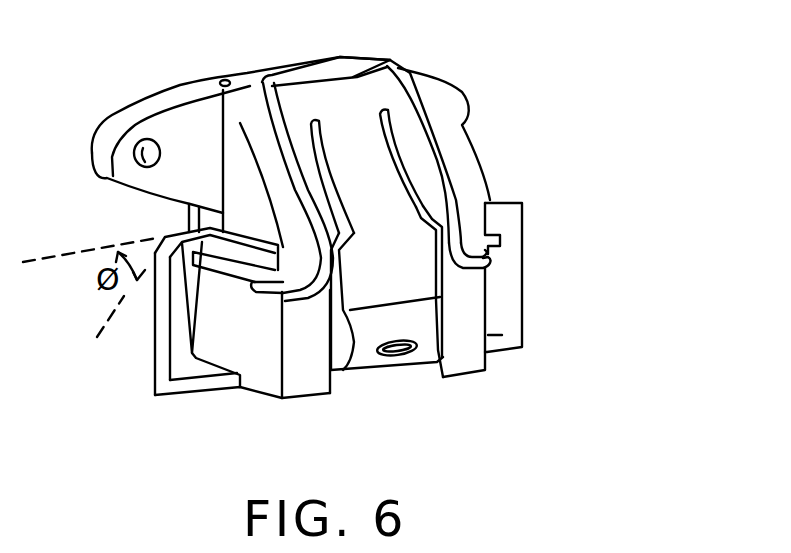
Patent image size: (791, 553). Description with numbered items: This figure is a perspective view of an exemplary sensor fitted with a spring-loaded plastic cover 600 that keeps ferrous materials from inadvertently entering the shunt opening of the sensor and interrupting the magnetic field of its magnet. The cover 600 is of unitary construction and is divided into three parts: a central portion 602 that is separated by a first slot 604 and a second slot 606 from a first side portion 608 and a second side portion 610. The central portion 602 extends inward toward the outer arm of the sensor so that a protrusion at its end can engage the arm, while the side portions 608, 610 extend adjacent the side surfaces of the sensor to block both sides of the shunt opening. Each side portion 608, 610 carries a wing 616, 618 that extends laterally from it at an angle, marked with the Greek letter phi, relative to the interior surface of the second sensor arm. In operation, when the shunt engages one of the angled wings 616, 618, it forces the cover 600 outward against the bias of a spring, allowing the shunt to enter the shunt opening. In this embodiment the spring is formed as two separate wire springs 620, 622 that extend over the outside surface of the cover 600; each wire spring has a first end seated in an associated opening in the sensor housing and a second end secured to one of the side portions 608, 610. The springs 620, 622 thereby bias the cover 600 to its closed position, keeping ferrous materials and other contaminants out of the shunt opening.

The spring-loaded plastic cover 600 is at (470, 173).
The central portion 602 is at (362, 358).
The first slot 604 is at (348, 363).
The second slot 606 is at (442, 290).
The first side portion 608 is at (260, 383).
The second side portion 610 is at (490, 307).
The wing 616 is at (155, 380).
The wing 618 is at (523, 246).
The wire spring 620 is at (282, 130).
The wire spring 622 is at (417, 72).